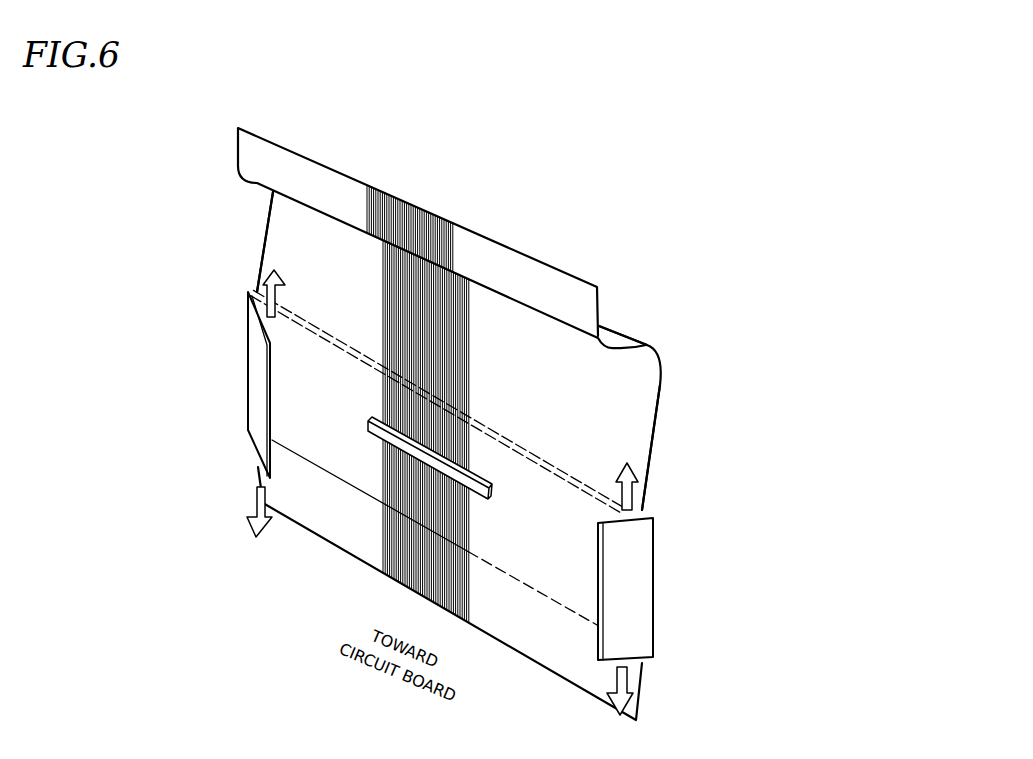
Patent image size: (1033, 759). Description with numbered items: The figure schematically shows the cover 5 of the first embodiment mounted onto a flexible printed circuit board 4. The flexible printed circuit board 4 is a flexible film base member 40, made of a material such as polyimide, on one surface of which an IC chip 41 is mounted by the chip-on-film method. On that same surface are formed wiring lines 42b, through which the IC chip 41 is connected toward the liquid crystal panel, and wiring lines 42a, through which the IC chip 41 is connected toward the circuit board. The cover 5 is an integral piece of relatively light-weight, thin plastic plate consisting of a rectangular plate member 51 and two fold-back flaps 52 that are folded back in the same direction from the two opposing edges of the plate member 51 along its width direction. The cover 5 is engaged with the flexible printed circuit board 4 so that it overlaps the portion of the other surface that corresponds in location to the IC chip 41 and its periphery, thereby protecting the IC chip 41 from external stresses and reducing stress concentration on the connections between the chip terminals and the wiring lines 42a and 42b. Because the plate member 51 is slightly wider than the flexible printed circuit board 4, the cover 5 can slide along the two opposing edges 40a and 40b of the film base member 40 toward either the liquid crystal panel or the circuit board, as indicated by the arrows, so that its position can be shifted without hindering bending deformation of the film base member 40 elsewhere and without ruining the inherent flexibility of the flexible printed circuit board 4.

The flexible printed circuit board 4 is at (691, 353).
The film base member 40 is at (633, 426).
The edge of the film base member 40a is at (660, 398).
The edge of the film base member 40b is at (269, 209).
The IC chip 41 is at (492, 497).
The wiring lines 42a is at (360, 522).
The wiring lines 42b is at (358, 283).
The cover 5 is at (434, 492).
The plate member 51 is at (645, 516).
The fold-back flaps 52 is at (250, 406).